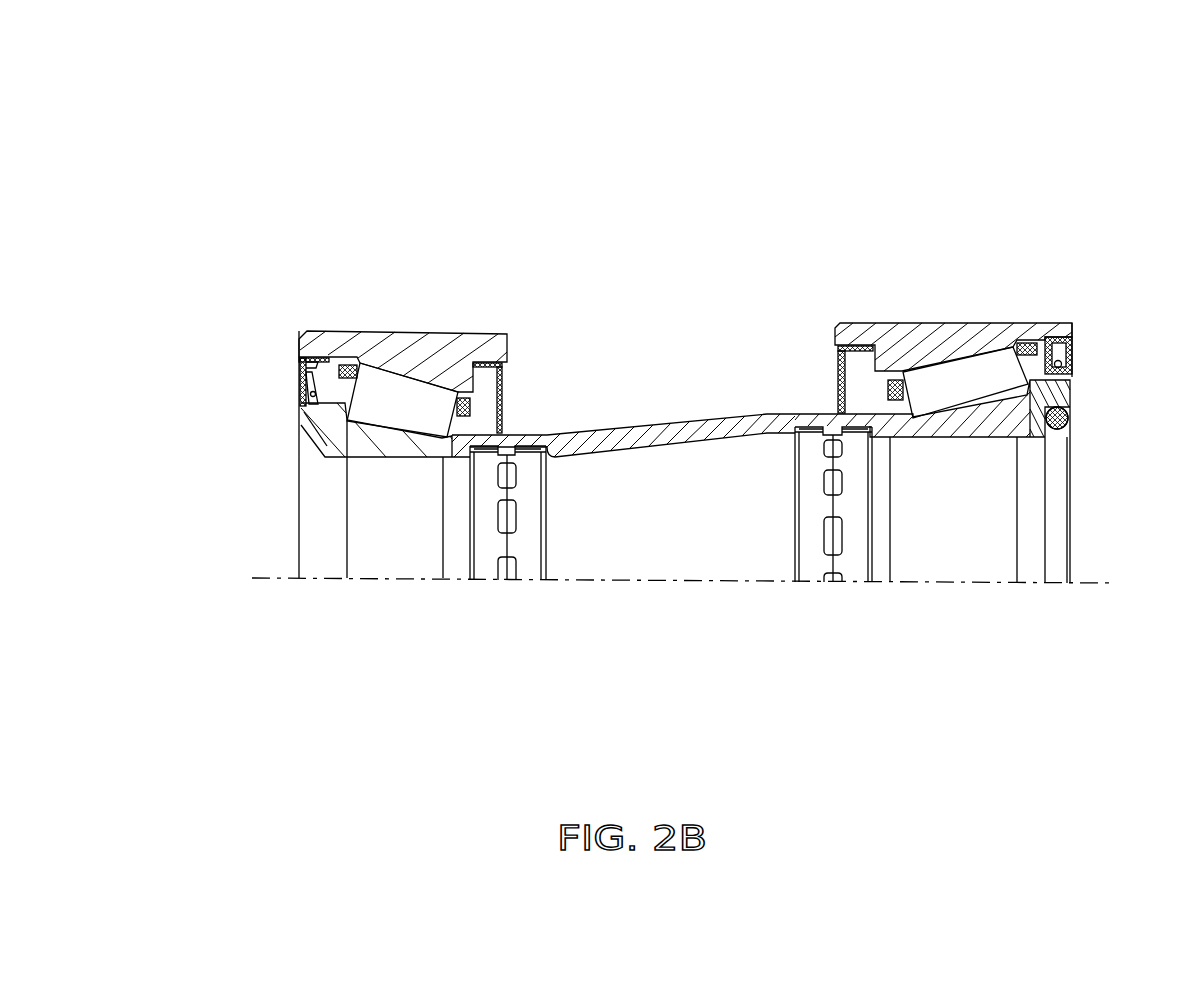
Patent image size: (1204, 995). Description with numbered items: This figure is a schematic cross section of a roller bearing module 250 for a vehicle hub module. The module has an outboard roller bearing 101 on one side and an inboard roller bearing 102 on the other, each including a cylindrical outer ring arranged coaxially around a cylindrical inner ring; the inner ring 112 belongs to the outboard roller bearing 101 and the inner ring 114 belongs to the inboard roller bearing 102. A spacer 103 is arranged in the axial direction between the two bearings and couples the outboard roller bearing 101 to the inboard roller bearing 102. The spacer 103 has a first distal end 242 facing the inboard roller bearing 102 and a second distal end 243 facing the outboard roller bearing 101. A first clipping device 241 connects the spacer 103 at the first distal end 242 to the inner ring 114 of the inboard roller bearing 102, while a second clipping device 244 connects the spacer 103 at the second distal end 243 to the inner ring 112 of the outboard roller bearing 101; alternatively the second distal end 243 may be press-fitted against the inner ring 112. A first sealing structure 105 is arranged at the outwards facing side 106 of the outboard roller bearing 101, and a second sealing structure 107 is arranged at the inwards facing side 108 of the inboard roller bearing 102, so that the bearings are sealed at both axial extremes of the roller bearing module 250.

The roller bearing module 250 is at (1050, 98).
The outboard roller bearing 101 is at (413, 289).
The inboard roller bearing 102 is at (988, 279).
The spacer 103 is at (692, 422).
The first sealing structure 105 is at (299, 369).
The outwards facing side 106 is at (299, 394).
The second sealing structure 107 is at (1072, 362).
The inwards facing side 108 is at (1071, 397).
The inner ring 112 is at (437, 447).
The inner ring 114 is at (892, 428).
The first clipping device 241 is at (797, 552).
The first distal end 242 is at (800, 422).
The second distal end 243 is at (508, 439).
The second clipping device 244 is at (547, 543).